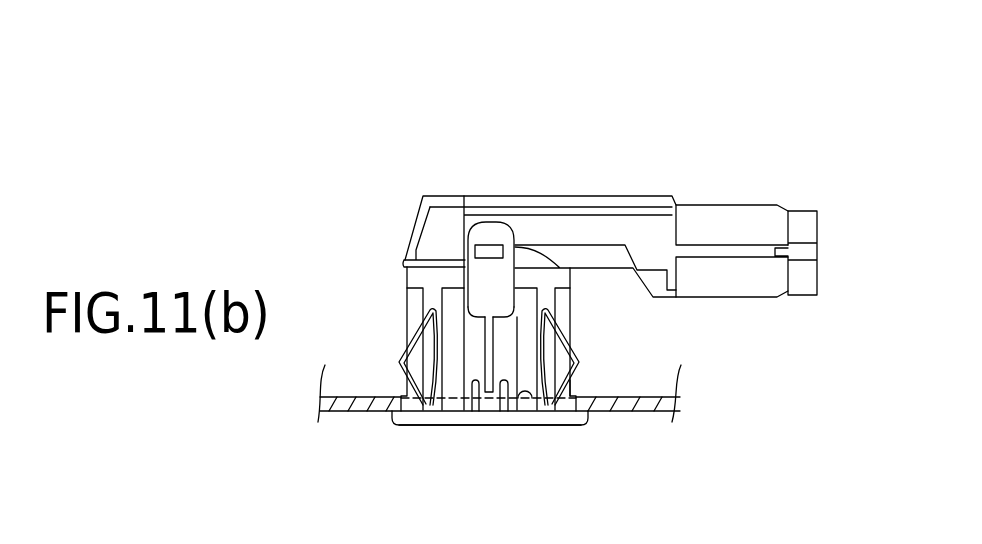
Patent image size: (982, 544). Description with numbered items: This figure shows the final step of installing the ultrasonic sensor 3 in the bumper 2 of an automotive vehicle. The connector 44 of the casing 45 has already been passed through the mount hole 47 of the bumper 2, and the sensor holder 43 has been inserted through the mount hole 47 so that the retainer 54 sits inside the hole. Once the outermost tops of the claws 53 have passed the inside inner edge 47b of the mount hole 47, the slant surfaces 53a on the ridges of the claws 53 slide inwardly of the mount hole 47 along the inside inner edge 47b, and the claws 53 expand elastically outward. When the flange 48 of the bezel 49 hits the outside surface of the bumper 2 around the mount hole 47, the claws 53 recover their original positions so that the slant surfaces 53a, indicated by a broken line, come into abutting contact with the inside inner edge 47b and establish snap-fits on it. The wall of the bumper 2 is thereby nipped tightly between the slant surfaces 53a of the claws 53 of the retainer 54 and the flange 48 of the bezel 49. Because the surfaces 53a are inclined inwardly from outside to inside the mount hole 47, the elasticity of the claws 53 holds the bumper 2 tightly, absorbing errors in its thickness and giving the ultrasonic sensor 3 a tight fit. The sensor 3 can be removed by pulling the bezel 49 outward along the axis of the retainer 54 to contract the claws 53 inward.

The bumper 2 is at (348, 412).
The ultrasonic sensor 3 is at (452, 117).
The sensor holder 43 is at (418, 222).
The connector 44 is at (804, 210).
The casing 45 is at (546, 162).
The mount hole 47 is at (414, 412).
The inside inner edge 47b is at (523, 403).
The flange 48 is at (490, 460).
The bezel 49 is at (463, 412).
The claws 53 is at (583, 345).
The slant surfaces 53a is at (572, 385).
The retainer 54 is at (385, 333).